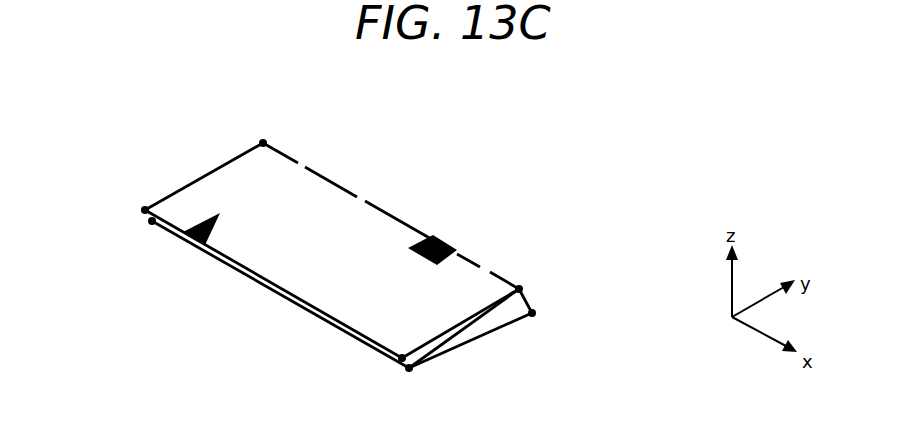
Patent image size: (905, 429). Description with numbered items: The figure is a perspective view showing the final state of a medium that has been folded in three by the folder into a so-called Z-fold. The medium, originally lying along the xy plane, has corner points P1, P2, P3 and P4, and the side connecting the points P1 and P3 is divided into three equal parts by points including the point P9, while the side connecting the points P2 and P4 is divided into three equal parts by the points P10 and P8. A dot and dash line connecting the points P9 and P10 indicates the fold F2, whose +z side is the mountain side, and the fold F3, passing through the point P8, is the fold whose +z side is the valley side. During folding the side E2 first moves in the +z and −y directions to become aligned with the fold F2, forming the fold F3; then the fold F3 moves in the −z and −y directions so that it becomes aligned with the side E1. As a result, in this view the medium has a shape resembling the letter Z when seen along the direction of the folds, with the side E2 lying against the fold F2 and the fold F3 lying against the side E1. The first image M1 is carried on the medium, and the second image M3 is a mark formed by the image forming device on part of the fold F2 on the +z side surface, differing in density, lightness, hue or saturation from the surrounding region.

The point P1 is at (150, 222).
The point P2 is at (533, 316).
The point P3 is at (145, 208).
The point P4 is at (402, 356).
The point P8 is at (407, 369).
The point P9 is at (263, 141).
The point P10 is at (519, 287).
The side E1 is at (300, 298).
The side E2 is at (526, 305).
The fold F2 is at (358, 194).
The fold F3 is at (283, 298).
The first image M1 is at (190, 244).
The second image M3 is at (432, 236).